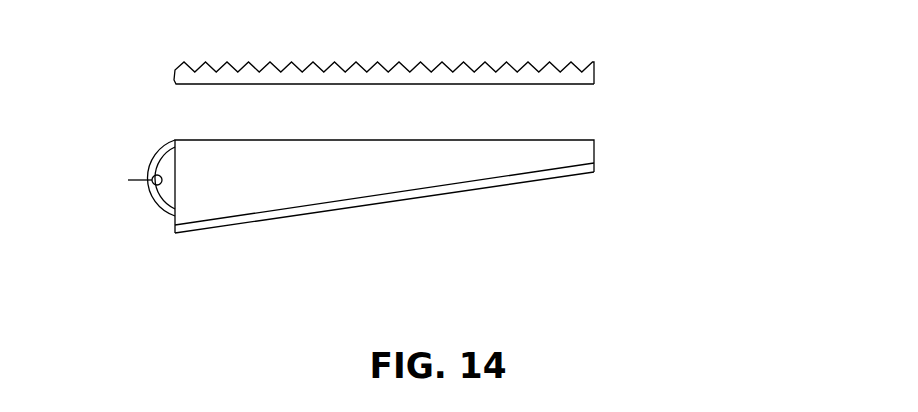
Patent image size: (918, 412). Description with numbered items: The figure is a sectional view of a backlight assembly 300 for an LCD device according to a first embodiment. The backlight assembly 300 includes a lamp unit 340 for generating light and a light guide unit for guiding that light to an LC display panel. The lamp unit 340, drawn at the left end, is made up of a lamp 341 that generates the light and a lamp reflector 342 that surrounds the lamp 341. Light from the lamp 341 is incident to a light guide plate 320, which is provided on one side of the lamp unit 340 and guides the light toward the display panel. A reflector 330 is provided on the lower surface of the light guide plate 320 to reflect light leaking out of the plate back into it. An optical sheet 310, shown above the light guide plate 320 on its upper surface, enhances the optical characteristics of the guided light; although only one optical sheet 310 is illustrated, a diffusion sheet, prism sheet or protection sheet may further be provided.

The backlight assembly 300 is at (752, 42).
The optical sheet 310 is at (596, 74).
The light guide plate 320 is at (595, 141).
The reflector 330 is at (595, 165).
The lamp unit 340 is at (112, 217).
The lamp 341 is at (123, 185).
The lamp reflector 342 is at (140, 219).